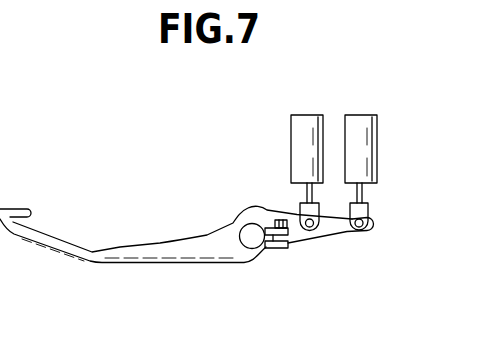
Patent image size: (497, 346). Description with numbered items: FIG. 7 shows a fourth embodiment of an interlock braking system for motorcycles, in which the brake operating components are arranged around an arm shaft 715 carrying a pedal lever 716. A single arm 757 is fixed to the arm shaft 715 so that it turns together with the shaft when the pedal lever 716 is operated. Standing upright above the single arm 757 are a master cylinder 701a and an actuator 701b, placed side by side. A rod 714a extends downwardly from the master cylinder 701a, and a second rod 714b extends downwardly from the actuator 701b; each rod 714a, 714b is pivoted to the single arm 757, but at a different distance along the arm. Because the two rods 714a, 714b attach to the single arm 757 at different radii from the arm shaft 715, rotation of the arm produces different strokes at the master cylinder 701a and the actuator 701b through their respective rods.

The master cylinder 701a is at (303, 127).
The actuator 701b is at (367, 127).
The rod 714a is at (300, 192).
The rod 714b is at (362, 199).
The arm shaft 715 is at (252, 241).
The pedal lever 716 is at (165, 253).
The single arm 757 is at (342, 216).